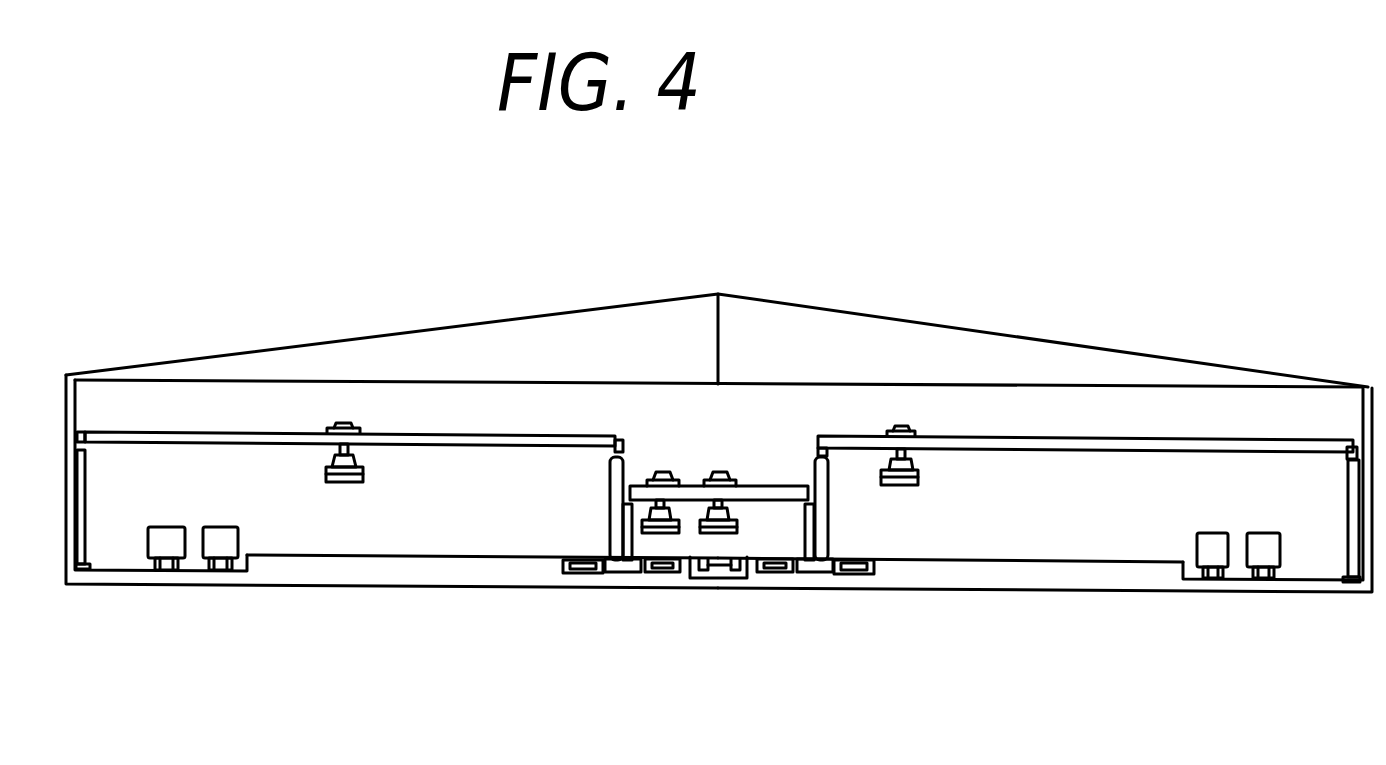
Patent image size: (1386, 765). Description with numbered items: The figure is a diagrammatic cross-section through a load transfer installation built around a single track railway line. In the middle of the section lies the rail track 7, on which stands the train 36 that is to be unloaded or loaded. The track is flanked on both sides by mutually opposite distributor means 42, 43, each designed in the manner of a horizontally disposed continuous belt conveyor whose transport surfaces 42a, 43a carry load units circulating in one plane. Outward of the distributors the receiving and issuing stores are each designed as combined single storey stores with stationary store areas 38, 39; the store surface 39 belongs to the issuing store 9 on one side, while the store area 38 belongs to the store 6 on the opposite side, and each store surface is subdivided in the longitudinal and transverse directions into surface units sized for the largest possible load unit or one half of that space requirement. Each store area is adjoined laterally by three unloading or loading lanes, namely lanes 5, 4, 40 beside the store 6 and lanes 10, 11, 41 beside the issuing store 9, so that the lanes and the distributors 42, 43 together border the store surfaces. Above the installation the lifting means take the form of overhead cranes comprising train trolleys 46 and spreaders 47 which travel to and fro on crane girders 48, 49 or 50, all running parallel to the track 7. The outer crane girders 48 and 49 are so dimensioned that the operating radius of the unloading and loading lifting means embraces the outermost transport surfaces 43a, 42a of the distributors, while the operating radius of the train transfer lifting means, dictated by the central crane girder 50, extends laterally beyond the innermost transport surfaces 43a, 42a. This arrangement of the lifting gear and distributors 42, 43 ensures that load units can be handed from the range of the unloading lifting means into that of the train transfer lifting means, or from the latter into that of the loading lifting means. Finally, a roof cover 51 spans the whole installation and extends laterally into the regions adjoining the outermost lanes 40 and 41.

The unloading or loading lane 4 is at (1263, 580).
The unloading or loading lane 5 is at (1208, 580).
The right module 6 is at (1098, 523).
The rail track 7 is at (749, 589).
The issuing store 9 is at (468, 520).
The unloading or loading lane 10 is at (220, 575).
The unloading or loading lane 11 is at (167, 575).
The train 36 is at (743, 545).
The stationary store area 38 is at (1028, 560).
The stationary store area 39 is at (522, 557).
The outermost lane 40 is at (1317, 570).
The outermost lane 41 is at (116, 557).
The distributor means 42 is at (864, 630).
The transport surface 42a is at (858, 573).
The distributor means 43 is at (609, 636).
The transport surface 43a is at (585, 572).
The train trolley 46 is at (355, 426).
The spreader 47 is at (352, 483).
The crane girder 48 is at (1242, 447).
The crane girder 49 is at (568, 442).
The crane girder 50 is at (770, 493).
The roof cover 51 is at (543, 338).